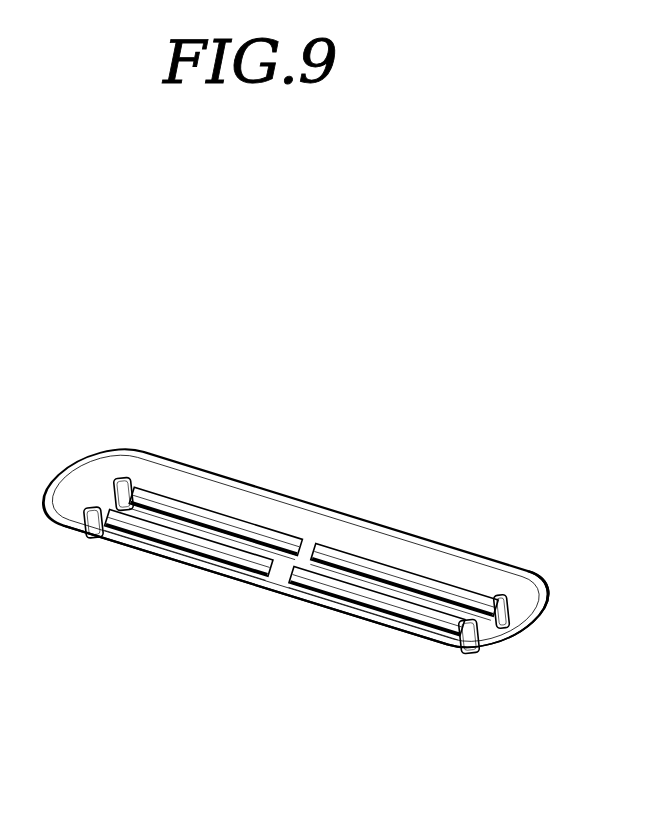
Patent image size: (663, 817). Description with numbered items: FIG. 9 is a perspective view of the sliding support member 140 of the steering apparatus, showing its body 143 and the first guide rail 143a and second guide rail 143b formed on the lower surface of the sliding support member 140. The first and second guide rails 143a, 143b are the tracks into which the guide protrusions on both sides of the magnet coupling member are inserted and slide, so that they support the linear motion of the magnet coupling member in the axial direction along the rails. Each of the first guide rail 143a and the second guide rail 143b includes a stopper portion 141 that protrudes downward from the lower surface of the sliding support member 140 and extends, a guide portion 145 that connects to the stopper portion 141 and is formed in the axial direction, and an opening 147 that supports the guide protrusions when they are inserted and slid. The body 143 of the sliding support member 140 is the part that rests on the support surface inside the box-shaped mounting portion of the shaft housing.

The sliding support member 140 is at (71, 323).
The stopper portion 141 is at (125, 488).
The body 143 is at (75, 482).
The first guide rail 143a is at (513, 632).
The second guide rail 143b is at (445, 657).
The guide portion 145 is at (165, 517).
The opening 147 is at (235, 525).